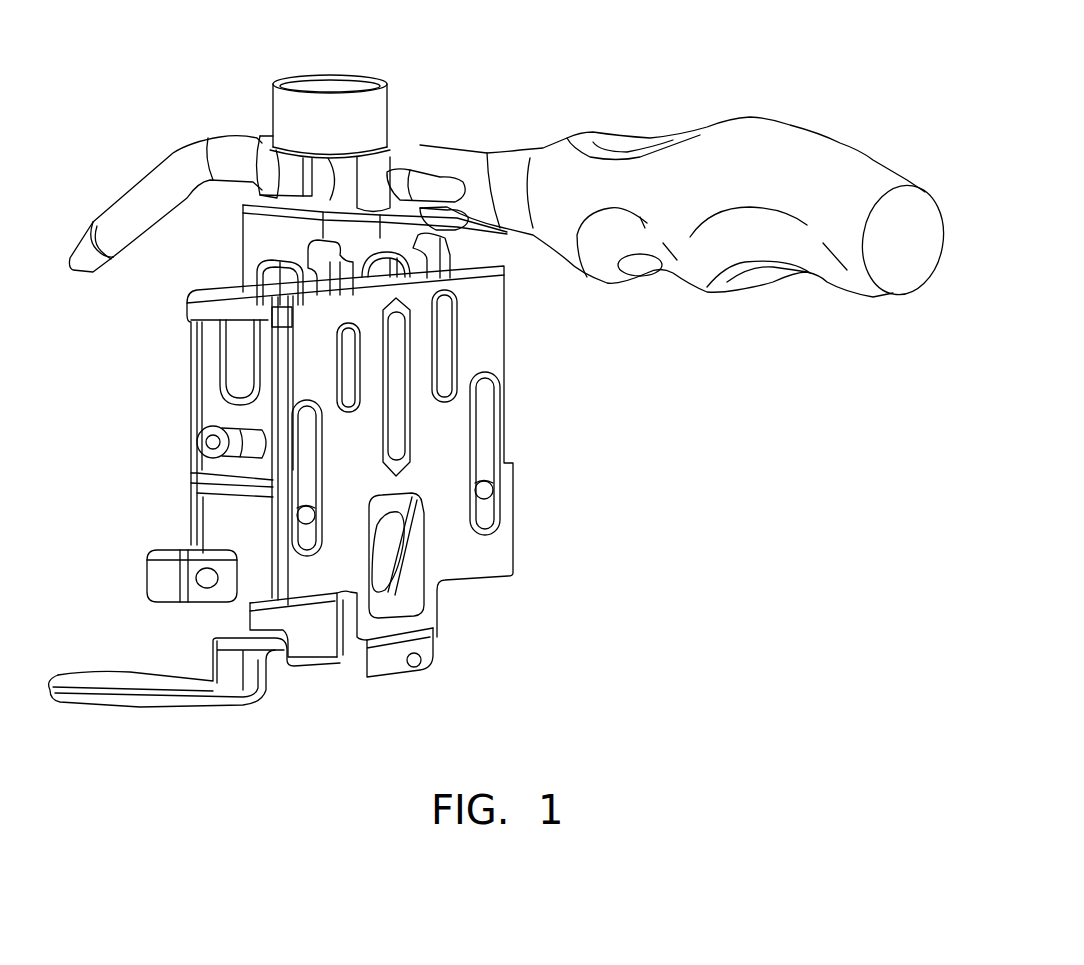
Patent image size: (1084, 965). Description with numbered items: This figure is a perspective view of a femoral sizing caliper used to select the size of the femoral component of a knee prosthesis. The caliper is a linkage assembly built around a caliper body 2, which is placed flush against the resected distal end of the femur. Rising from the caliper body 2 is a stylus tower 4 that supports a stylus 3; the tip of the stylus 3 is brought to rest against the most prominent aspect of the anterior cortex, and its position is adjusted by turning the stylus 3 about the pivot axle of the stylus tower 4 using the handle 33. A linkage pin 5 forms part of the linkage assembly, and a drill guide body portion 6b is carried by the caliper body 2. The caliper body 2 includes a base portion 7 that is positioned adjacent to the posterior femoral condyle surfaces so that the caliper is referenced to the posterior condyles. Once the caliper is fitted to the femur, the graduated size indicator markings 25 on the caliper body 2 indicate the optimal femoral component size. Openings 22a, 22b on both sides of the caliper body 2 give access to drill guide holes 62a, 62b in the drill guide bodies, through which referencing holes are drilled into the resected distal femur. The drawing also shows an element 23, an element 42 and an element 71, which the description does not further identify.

The caliper body 2 is at (497, 558).
The stylus 3 is at (157, 185).
The stylus tower 4 is at (253, 242).
The linkage pin 5 is at (203, 448).
The drill guide body portion 6b is at (210, 376).
The base portion 7 is at (317, 640).
The opening 22a is at (492, 405).
The opening 22b is at (318, 460).
The arm 23 is at (233, 478).
The graduated size indicator markings 25 is at (471, 326).
The handle 33 is at (757, 138).
The knob 42 is at (377, 102).
The drill guide hole 62a is at (477, 473).
The drill guide hole 62b is at (300, 506).
The lever 71 is at (98, 700).